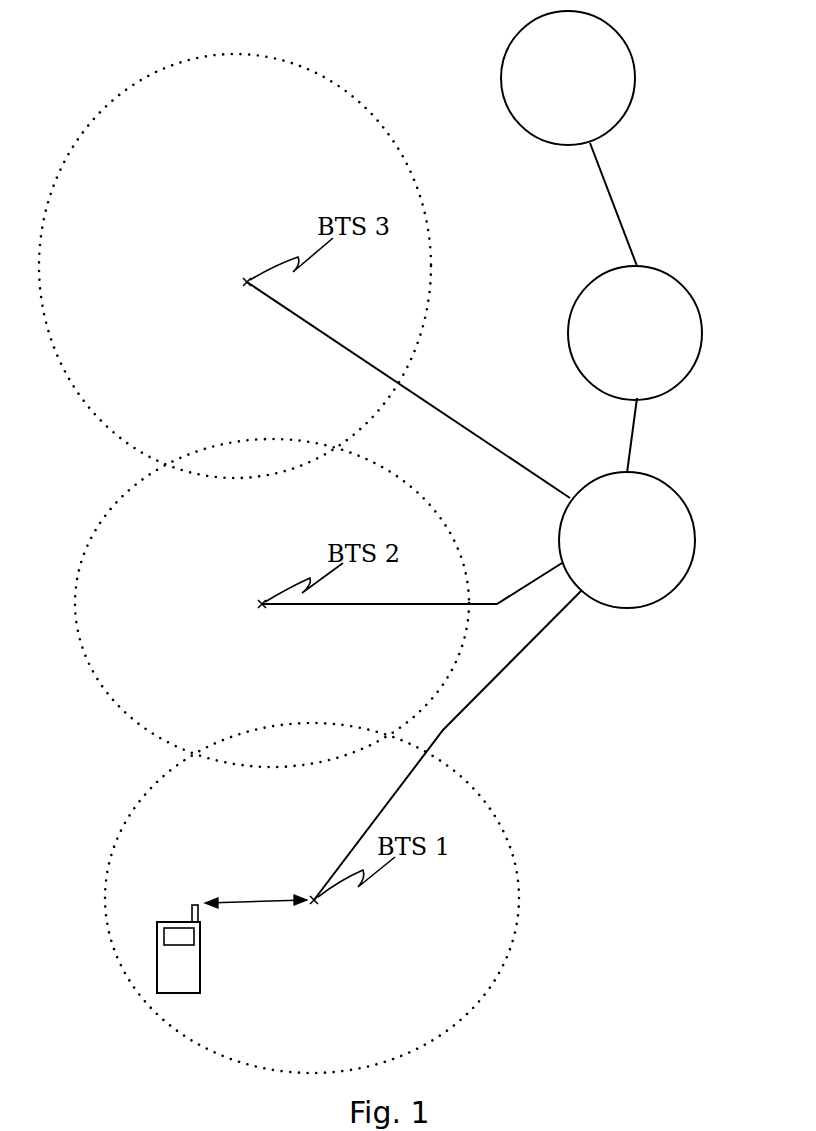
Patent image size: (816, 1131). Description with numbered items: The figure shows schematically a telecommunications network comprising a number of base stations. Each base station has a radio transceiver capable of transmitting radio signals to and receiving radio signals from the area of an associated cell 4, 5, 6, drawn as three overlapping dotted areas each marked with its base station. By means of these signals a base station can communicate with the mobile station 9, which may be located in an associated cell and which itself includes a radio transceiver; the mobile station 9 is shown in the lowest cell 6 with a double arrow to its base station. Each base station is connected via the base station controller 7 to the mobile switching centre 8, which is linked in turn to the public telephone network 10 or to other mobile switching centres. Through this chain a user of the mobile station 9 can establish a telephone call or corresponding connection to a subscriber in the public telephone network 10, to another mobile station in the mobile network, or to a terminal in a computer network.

The cell 4 is at (255, 59).
The cell 5 is at (123, 522).
The cell 6 is at (518, 853).
The base station controller 7 is at (682, 502).
The mobile switching centre 8 is at (673, 278).
The mobile station 9 is at (196, 960).
The public telephone network 10 is at (637, 72).